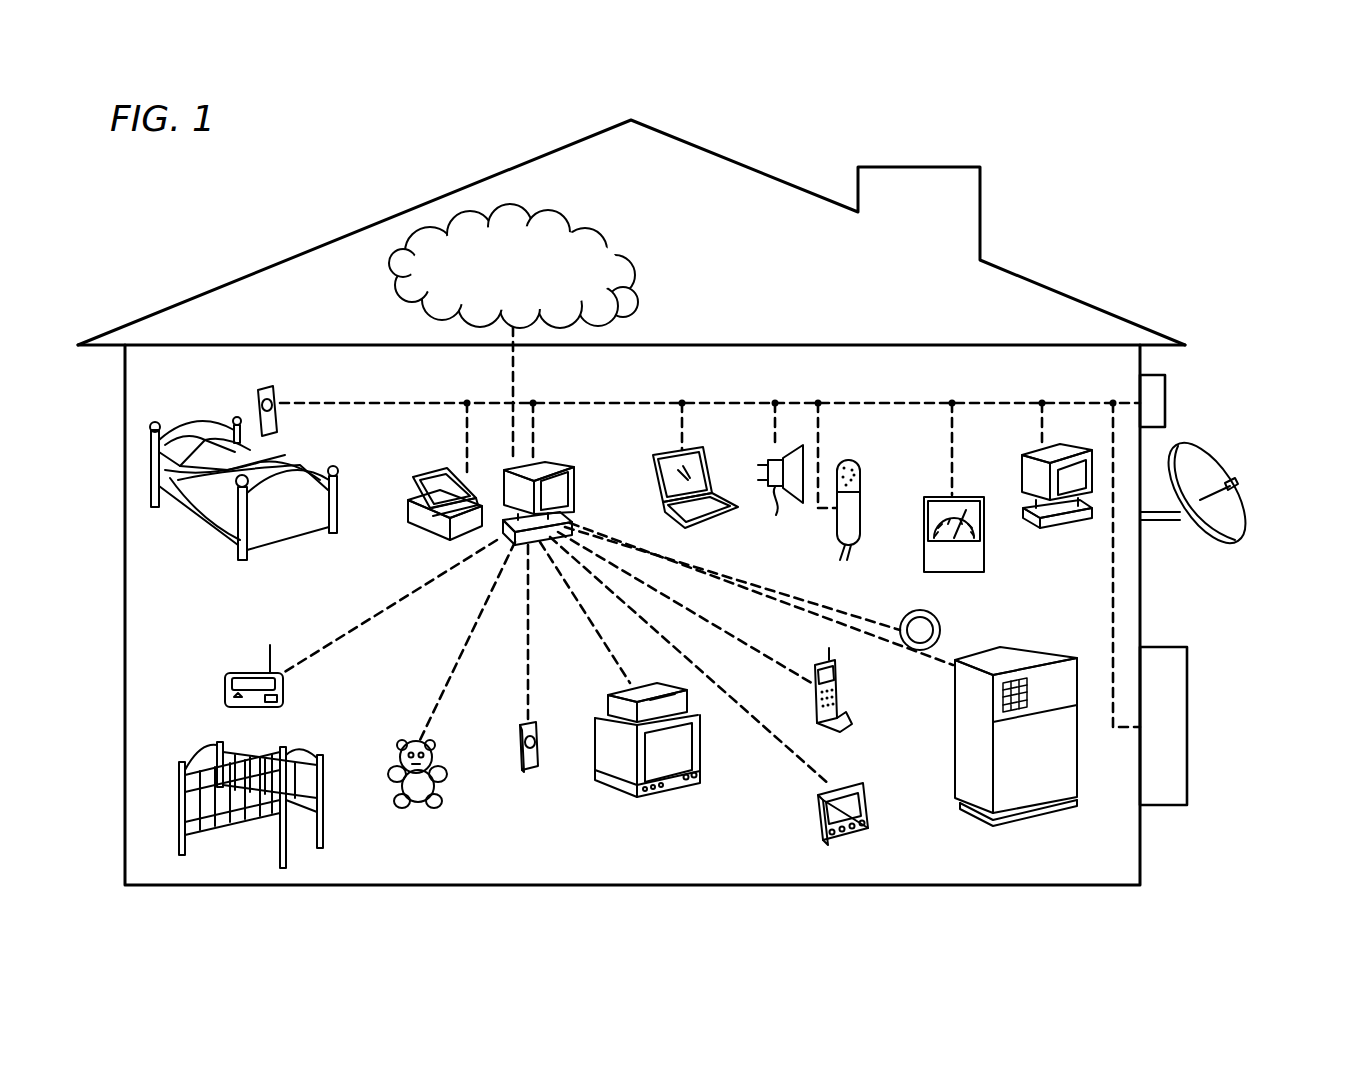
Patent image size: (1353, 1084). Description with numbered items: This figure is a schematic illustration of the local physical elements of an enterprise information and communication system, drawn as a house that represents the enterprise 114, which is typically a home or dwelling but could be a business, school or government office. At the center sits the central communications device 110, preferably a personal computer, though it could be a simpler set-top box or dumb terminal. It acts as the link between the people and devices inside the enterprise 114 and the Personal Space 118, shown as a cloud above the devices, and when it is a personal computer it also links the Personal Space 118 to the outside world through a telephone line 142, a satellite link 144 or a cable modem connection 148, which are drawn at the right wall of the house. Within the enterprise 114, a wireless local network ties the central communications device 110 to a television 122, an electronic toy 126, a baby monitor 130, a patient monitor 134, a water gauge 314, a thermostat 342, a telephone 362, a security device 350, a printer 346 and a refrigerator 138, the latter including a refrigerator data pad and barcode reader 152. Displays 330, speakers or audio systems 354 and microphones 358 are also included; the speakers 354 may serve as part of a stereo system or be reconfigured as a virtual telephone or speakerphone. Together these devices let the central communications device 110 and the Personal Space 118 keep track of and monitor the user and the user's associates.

The central communications device 110 is at (572, 517).
The enterprise 114 is at (291, 261).
The Personal Space 118 is at (585, 243).
The television 122 is at (613, 790).
The electronic toy 126 is at (413, 810).
The baby monitor 130 is at (224, 690).
The patient monitor 134 is at (520, 745).
The refrigerator 138 is at (979, 713).
The telephone line 142 is at (1166, 404).
The satellite link 144 is at (1242, 513).
The cable modem connection 148 is at (1190, 727).
The refrigerator data pad and barcode reader 152 is at (1025, 678).
The water gauge 314 is at (924, 552).
The display 330 is at (258, 405).
The thermostat 342 is at (938, 621).
The printer 346 is at (415, 520).
The security device 350 is at (818, 814).
The speakers or audio systems 354 is at (779, 495).
The microphones 358 is at (860, 484).
The telephone 362 is at (837, 692).